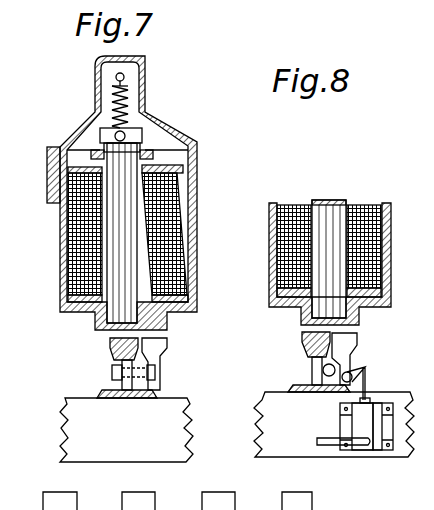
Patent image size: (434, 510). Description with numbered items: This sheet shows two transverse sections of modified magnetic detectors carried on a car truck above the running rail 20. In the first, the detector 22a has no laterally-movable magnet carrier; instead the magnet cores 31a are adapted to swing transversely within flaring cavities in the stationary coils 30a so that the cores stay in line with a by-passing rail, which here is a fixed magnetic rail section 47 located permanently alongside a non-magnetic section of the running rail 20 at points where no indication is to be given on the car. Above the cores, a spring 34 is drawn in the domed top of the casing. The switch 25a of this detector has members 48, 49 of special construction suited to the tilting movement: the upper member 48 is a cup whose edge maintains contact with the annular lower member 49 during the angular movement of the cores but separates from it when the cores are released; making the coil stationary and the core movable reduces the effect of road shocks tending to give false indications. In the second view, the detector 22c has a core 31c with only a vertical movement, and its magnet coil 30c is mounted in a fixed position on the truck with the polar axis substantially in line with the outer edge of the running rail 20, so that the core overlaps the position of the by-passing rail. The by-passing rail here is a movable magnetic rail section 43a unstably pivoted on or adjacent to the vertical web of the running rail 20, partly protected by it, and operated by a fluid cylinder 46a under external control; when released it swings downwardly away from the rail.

In FIG. 7, the running rail 20 is at (112, 355).
In FIG. 8, the running rail 20 is at (303, 348).
In FIG. 7, the detector 22a is at (165, 140).
In FIG. 8, the detector 22c is at (269, 224).
In FIG. 7, the switch 25a is at (92, 157).
In FIG. 7, the coils 30a is at (172, 200).
In FIG. 8, the magnet coil 30c is at (288, 252).
In FIG. 7, the magnet cores 31a is at (108, 250).
In FIG. 8, the core 31c is at (326, 213).
In FIG. 7, the spring 34 is at (112, 106).
In FIG. 8, the movable magnetic rail section 43a is at (357, 338).
In FIG. 8, the fluid cylinder 46a is at (353, 423).
In FIG. 7, the fixed magnetic rail section 47 is at (160, 348).
In FIG. 7, the upper member 48 is at (140, 145).
In FIG. 7, the annular lower member 49 is at (152, 160).